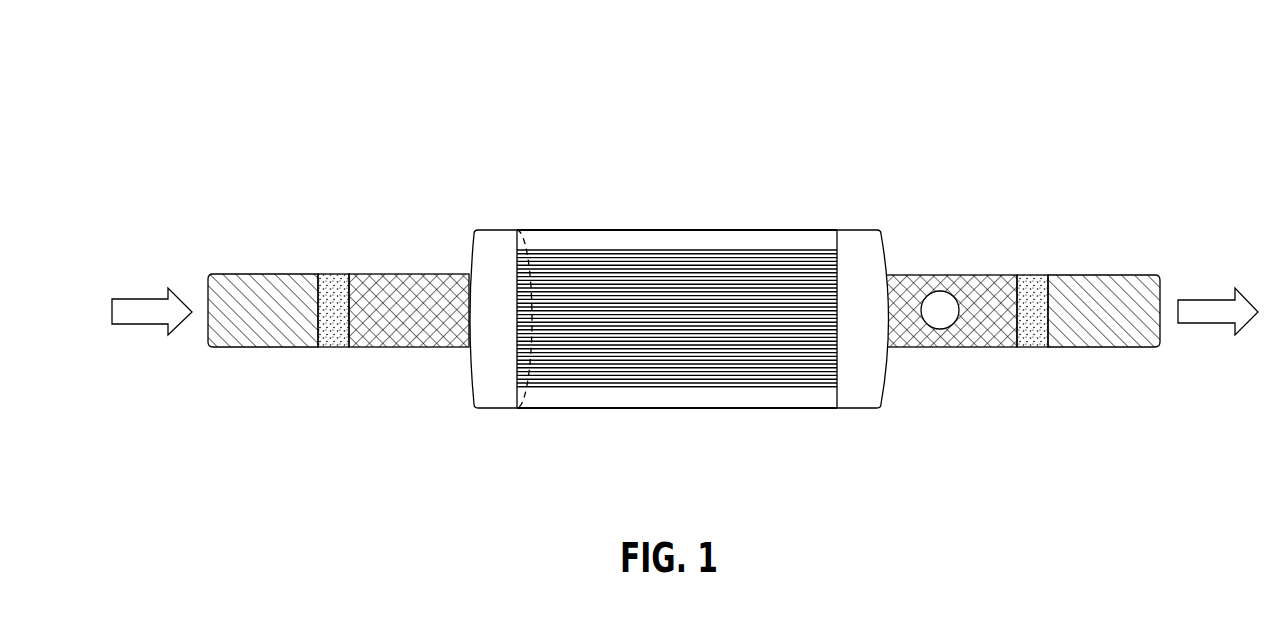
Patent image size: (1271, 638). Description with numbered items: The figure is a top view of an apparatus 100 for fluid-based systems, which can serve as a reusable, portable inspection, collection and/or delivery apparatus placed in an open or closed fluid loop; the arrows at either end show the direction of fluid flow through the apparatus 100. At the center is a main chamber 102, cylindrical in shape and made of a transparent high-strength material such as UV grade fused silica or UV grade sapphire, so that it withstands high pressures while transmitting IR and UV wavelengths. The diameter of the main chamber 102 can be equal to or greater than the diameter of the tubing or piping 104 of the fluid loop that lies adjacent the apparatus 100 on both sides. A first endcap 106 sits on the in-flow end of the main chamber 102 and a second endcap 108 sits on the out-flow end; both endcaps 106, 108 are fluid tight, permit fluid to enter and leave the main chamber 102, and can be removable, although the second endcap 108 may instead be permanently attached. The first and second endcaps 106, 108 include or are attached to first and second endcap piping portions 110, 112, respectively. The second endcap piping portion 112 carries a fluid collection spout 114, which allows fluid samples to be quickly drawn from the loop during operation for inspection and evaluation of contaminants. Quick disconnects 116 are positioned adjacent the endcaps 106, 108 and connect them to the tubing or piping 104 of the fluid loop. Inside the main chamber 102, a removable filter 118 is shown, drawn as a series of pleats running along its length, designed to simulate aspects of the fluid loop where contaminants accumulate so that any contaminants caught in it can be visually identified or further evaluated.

The apparatus 100 is at (625, 47).
The main chamber 102 is at (697, 238).
The tubing or piping 104 is at (263, 285).
The first endcap 106 is at (493, 395).
The second endcap 108 is at (859, 242).
The first endcap piping portion 110 is at (422, 285).
The second endcap piping portion 112 is at (990, 288).
The fluid collection spout 114 is at (943, 320).
The quick disconnects 116 is at (335, 345).
The fiber bundle 118 is at (651, 333).